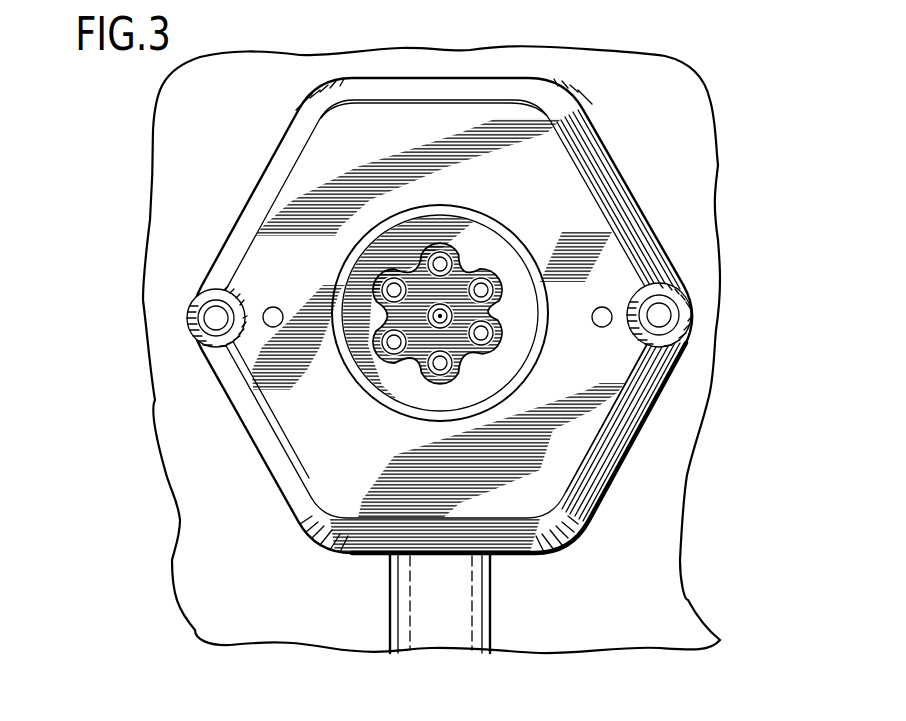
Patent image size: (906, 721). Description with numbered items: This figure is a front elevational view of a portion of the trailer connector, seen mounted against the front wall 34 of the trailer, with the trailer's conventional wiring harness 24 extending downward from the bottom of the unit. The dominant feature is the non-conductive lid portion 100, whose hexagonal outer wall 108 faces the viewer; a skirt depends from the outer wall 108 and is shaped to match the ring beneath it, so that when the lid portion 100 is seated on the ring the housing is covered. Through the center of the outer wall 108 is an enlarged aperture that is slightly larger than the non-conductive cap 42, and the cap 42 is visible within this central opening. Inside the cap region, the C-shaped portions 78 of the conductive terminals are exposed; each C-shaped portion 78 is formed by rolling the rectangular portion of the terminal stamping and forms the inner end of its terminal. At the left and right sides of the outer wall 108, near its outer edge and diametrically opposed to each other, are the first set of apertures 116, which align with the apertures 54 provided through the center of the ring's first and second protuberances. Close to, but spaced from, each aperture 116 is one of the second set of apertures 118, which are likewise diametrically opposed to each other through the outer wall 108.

The wiring harness 24 is at (486, 603).
The front wall 34 is at (457, 349).
The non-conductive cap 42 is at (458, 312).
The aperture 54 is at (465, 268).
The C-shaped portion 78 is at (441, 322).
The lid portion 100 is at (483, 315).
The outer wall 108 is at (448, 338).
The first set of apertures 116 is at (440, 338).
The second set of apertures 118 is at (518, 264).